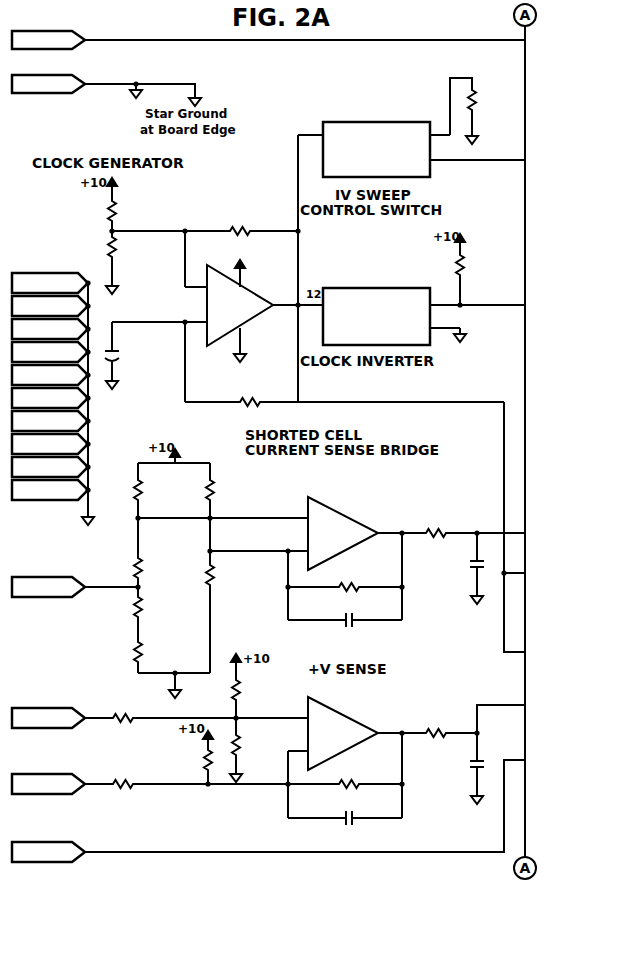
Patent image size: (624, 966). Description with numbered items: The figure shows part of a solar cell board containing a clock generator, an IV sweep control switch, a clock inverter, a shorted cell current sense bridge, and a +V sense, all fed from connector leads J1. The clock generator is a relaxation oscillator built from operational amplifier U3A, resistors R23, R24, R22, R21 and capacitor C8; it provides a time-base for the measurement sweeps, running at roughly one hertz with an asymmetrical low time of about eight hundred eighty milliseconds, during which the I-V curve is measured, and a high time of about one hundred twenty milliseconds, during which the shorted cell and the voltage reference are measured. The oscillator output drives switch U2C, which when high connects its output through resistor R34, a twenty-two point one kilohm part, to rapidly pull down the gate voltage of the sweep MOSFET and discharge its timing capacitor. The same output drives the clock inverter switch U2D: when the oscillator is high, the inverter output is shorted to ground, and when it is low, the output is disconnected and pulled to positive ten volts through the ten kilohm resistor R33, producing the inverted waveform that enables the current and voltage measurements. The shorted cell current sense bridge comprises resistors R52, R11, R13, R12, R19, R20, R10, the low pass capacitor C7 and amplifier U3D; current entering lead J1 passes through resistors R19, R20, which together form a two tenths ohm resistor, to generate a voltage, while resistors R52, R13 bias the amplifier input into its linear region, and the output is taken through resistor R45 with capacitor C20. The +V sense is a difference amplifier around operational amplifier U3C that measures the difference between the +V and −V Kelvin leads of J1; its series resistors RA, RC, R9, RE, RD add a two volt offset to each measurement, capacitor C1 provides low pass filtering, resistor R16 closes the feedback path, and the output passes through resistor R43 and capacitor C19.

The lead J1 is at (53, 436).
The resistor R23 is at (131, 211).
The resistor R24 is at (134, 255).
The resistor R22 is at (205, 216).
The resistor R21 is at (344, 388).
The operational amplifier U3A is at (254, 306).
The capacitor C8 is at (145, 355).
The switch U2C is at (411, 141).
The resistor R34 is at (484, 111).
The resistor R33 is at (475, 276).
The switch U2D is at (424, 308).
The resistor R52 is at (160, 490).
The resistor R11 is at (232, 507).
The resistor R13 is at (160, 555).
The resistor R12 is at (232, 612).
The resistor R19 is at (153, 614).
The resistor R20 is at (153, 655).
The operational amplifier U3D is at (356, 525).
The resistor R45 is at (473, 517).
The resistor R10 is at (345, 595).
The capacitor C7 is at (345, 627).
The capacitor C20 is at (462, 568).
The operational amplifier U3C is at (354, 725).
The resistor R43 is at (449, 717).
The capacitor C19 is at (448, 768).
The resistor R16 is at (345, 792).
The capacitor C1 is at (345, 825).
The resistor RA is at (196, 702).
The resistor RC is at (257, 693).
The resistor R9 is at (256, 750).
The resistor RE is at (186, 769).
The resistor RD is at (187, 763).